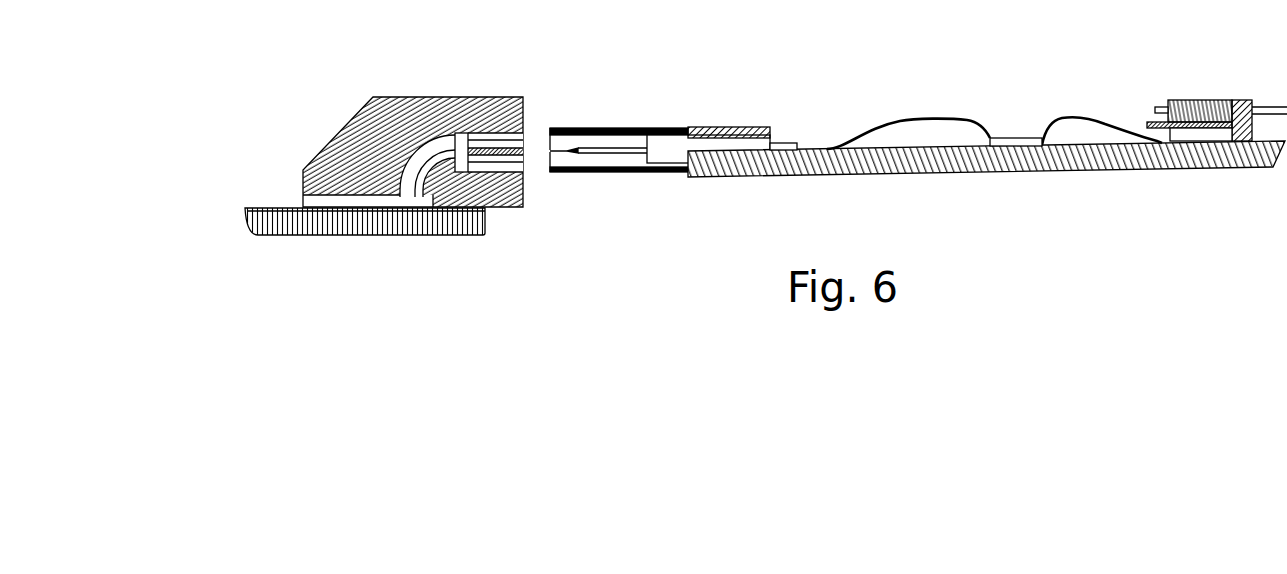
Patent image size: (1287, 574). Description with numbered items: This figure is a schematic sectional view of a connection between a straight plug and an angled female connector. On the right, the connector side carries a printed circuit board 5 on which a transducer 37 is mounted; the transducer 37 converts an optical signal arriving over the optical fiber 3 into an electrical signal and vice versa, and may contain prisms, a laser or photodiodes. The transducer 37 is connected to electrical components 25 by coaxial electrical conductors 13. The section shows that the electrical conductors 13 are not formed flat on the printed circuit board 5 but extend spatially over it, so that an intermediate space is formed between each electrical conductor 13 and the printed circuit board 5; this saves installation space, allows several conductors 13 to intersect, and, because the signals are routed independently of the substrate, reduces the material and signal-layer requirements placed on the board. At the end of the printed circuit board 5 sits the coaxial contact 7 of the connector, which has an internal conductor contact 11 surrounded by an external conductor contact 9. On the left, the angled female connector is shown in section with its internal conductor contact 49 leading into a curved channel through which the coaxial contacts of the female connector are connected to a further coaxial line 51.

The optical fiber 3 is at (1272, 102).
The printed circuit board 5 is at (917, 158).
The contact 7 is at (660, 142).
The external conductor contact 9 is at (577, 171).
The internal conductor contact 11 is at (612, 153).
The coaxial electrical conductor 13 is at (925, 117).
The electrical component 25 is at (1012, 130).
The transducer 37 is at (1166, 91).
The internal conductor contact of the female connector 49 is at (464, 140).
The further coaxial line 51 is at (405, 208).